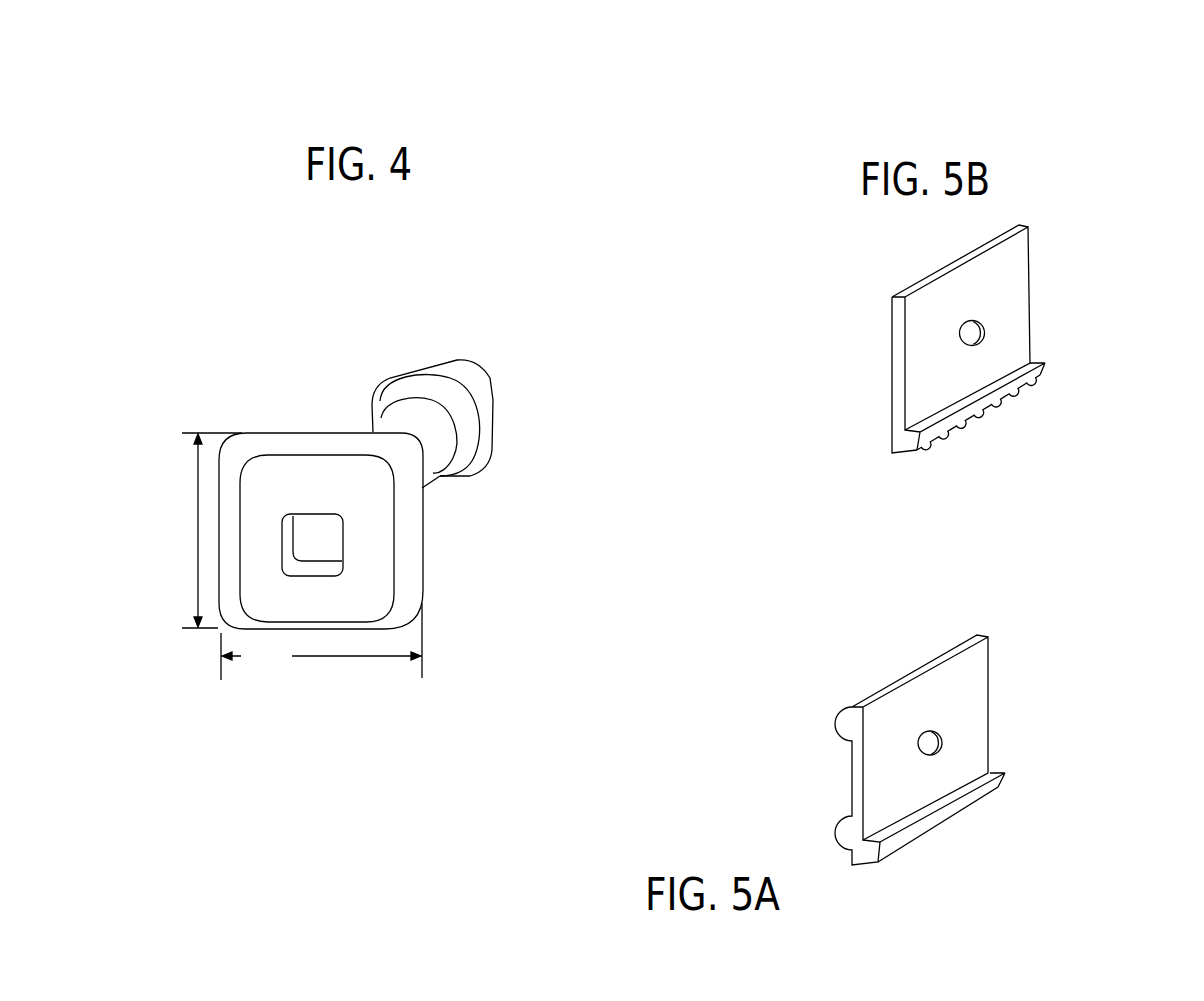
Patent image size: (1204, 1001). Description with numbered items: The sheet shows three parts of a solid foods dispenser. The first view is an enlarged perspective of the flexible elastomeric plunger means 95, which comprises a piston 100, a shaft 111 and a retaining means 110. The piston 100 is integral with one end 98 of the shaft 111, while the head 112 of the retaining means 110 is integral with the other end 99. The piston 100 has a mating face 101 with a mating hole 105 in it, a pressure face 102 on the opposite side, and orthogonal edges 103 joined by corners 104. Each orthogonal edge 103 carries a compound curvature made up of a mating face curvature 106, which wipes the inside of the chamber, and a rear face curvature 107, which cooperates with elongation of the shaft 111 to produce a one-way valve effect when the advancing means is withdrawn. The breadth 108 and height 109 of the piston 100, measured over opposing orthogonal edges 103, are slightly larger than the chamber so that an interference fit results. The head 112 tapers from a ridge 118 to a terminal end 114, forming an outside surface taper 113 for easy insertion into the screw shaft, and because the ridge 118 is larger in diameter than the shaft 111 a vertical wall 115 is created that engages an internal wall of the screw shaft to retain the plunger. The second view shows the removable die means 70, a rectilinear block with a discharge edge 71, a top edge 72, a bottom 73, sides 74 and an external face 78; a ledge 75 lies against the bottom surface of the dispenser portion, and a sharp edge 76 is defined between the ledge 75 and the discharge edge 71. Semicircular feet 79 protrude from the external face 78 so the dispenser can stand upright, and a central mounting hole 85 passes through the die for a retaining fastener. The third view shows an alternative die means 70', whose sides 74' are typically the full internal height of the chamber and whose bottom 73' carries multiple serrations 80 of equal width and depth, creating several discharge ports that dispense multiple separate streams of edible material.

In FIG. 4, the plunger means 95 is at (245, 320).
In FIG. 4, the retaining means 110 is at (497, 297).
In FIG. 4, the piston 100 is at (315, 592).
In FIG. 4, the mating face 101 is at (363, 608).
In FIG. 4, the pressure face 102 is at (423, 552).
In FIG. 4, the orthogonal edges 103 is at (298, 447).
In FIG. 4, the corners 104 is at (233, 443).
In FIG. 4, the mating hole 105 is at (317, 533).
In FIG. 4, the mating face curvature 106 is at (225, 452).
In FIG. 4, the rear face curvature 107 is at (257, 433).
In FIG. 4, the breadth 108 is at (321, 641).
In FIG. 4, the height 109 is at (206, 530).
In FIG. 4, the shaft 111 is at (402, 422).
In FIG. 4, the head 112 is at (483, 385).
In FIG. 4, the outside surface taper 113 is at (493, 413).
In FIG. 4, the terminal end 114 is at (480, 367).
In FIG. 4, the vertical wall 115 is at (482, 458).
In FIG. 4, the ridge 118 is at (400, 375).
In FIG. 4, the other end of shaft 99 is at (440, 478).
In FIG. 4, the one end of shaft 98 is at (428, 483).
In FIG. 5B, the die means 70' is at (1131, 208).
In FIG. 5B, the sides 74' is at (977, 339).
In FIG. 5B, the bottom 73' is at (981, 417).
In FIG. 5B, the serrations 80 is at (1007, 396).
In FIG. 5A, the die means 70 is at (1106, 614).
In FIG. 5A, the sides 74 is at (956, 737).
In FIG. 5A, the feet 79 is at (840, 828).
In FIG. 5A, the mounting hole 85 is at (930, 743).
In FIG. 5A, the bottom 73 is at (964, 827).
In FIG. 5A, the sharp edge 76 is at (957, 800).
In FIG. 5A, the ledge 75 is at (912, 804).
In FIG. 5A, the discharge edge 71 is at (858, 865).
In FIG. 5A, the top edge 72 is at (938, 660).
In FIG. 5A, the external face 78 is at (897, 683).